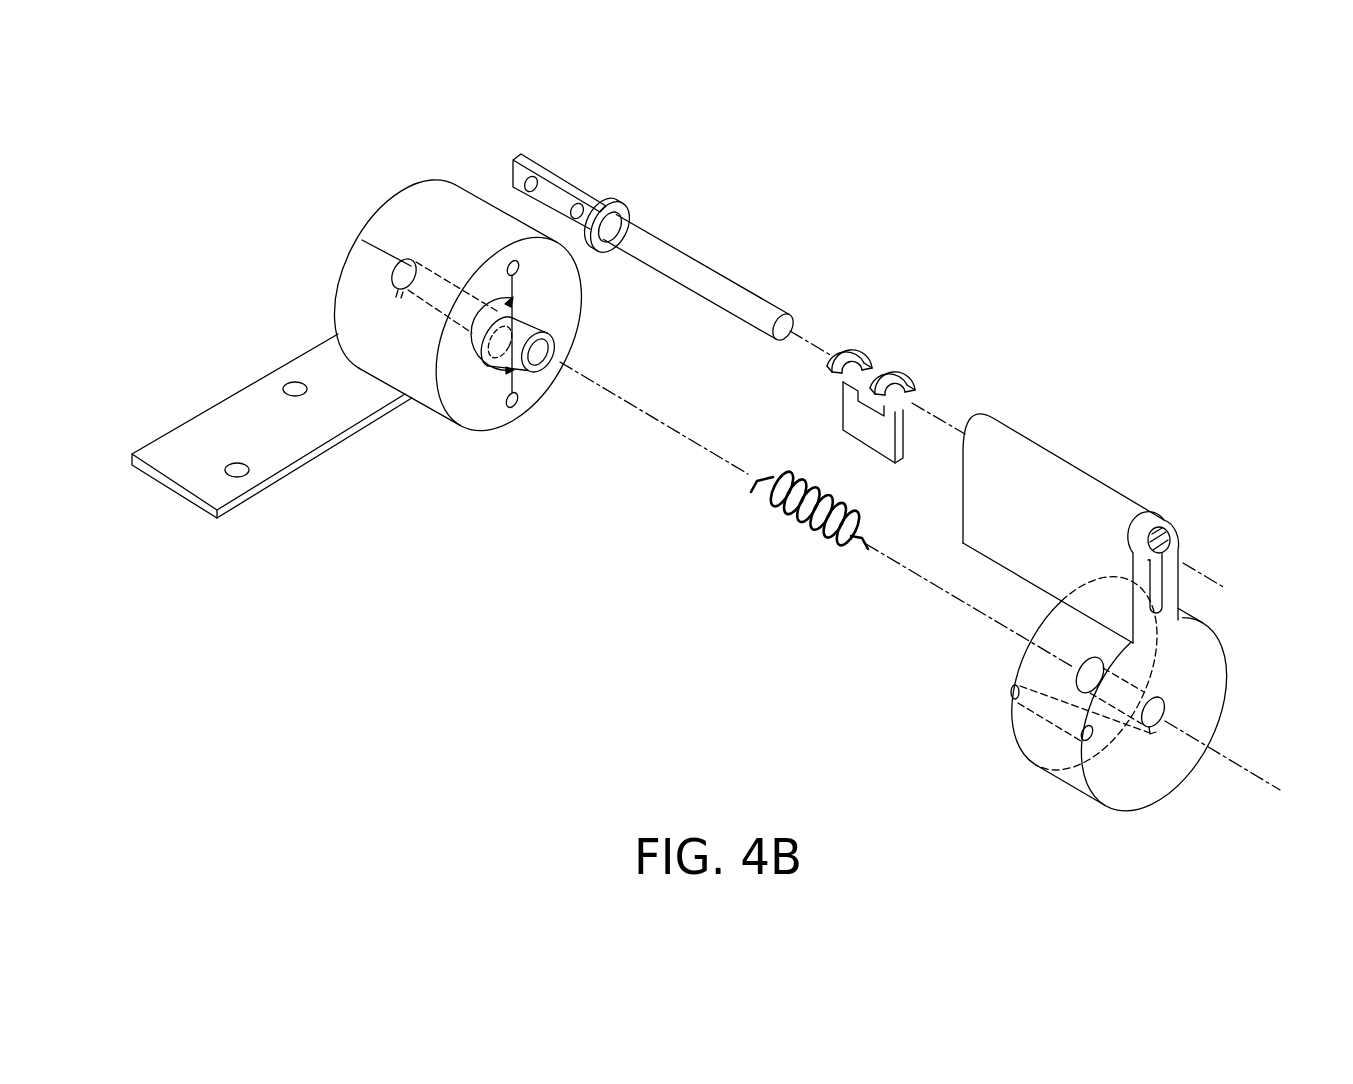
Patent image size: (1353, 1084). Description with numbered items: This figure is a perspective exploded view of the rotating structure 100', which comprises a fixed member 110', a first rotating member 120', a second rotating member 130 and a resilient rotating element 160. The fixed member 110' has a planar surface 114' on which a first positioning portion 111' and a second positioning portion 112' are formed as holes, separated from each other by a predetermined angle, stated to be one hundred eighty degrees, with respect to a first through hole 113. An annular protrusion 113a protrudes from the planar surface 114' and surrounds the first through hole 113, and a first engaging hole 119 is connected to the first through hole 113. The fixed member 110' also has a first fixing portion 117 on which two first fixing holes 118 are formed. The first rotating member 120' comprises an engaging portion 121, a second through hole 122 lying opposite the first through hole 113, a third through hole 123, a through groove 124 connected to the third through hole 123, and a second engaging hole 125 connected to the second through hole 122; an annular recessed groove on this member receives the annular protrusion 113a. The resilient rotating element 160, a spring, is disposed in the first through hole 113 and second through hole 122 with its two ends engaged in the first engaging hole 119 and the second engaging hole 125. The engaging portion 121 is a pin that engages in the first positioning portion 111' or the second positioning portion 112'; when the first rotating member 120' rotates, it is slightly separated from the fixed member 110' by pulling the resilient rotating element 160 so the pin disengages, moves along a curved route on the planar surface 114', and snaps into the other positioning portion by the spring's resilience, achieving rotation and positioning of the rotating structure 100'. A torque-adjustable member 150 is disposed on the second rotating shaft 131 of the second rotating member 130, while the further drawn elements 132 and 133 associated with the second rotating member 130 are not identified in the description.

The rotating structure 100' is at (718, 476).
The fixed member 110' is at (399, 311).
The first positioning portion 111' is at (515, 441).
The second positioning portion 112' is at (585, 282).
The first through hole 113 is at (549, 346).
The annular protrusion 113a is at (531, 358).
The planar surface 114' is at (594, 349).
The first fixing portion 117 is at (170, 447).
The first fixing holes 118 is at (237, 462).
The first engaging hole 119 is at (398, 292).
The first rotating member 120' is at (1091, 722).
The engaging portion 121 is at (1011, 693).
The second through hole 122 is at (1167, 710).
The third through hole 123 is at (1175, 540).
The through groove 124 is at (1177, 598).
The second engaging hole 125 is at (1132, 805).
The second rotating member 130 is at (616, 196).
The second rotating shaft 131 is at (663, 253).
The mounting bar 132 is at (513, 168).
The bar holes 133 is at (577, 204).
The torque-adjustable member 150 is at (898, 372).
The resilient rotating element 160 is at (803, 478).